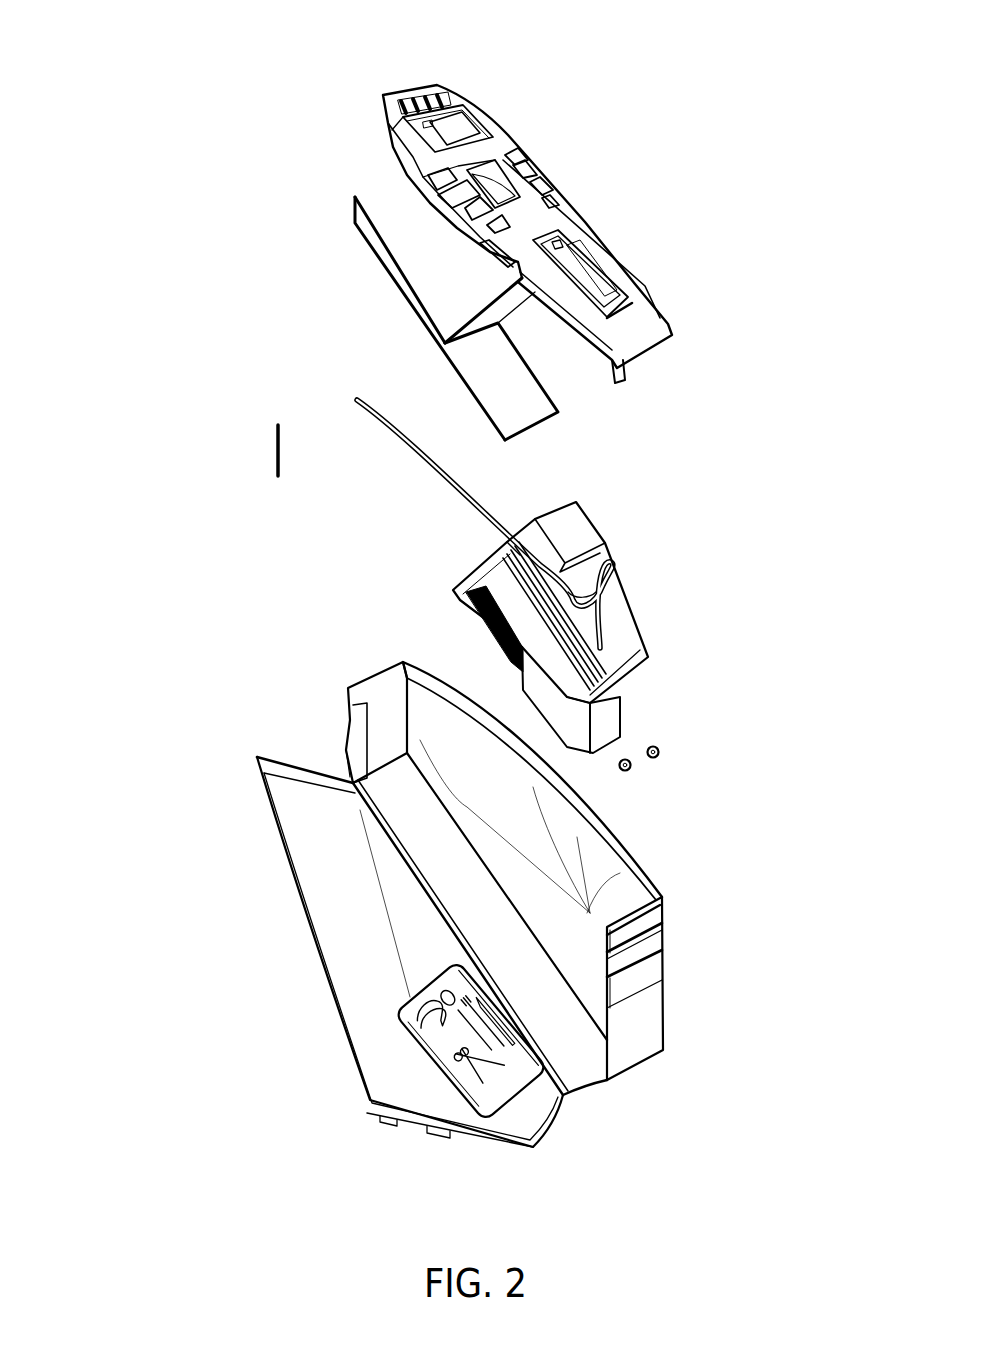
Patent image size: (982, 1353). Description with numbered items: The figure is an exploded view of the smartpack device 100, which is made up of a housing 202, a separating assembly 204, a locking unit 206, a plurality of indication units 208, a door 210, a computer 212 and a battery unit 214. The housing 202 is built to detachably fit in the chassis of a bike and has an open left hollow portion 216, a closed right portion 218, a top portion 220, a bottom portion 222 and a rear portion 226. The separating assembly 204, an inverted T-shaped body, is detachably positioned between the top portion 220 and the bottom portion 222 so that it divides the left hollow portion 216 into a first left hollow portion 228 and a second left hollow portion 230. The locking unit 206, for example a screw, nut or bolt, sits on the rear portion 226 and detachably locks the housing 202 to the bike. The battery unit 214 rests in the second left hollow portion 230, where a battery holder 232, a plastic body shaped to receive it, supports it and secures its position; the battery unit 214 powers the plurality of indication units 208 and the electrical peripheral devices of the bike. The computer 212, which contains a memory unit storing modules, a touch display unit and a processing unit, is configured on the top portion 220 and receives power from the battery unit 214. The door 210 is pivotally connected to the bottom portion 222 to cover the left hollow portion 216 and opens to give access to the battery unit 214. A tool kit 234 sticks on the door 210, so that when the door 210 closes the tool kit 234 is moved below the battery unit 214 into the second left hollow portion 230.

The smartpack device 100 is at (193, 56).
The housing 202 is at (243, 853).
The separating assembly 204 is at (505, 300).
The locking unit 206 is at (633, 767).
The plurality of indication units 208 is at (372, 94).
The door 210 is at (368, 927).
The computer 212 is at (460, 122).
The battery unit 214 is at (592, 680).
The open left hollow portion 216 is at (426, 221).
The closed right portion 218 is at (578, 870).
The top portion 220 is at (540, 226).
The bottom portion 222 is at (570, 1062).
The rear portion 226 is at (647, 1035).
The first left hollow portion 228 is at (462, 304).
The second left hollow portion 230 is at (520, 387).
The battery holder 232 is at (490, 627).
The tool kit 234 is at (457, 1060).